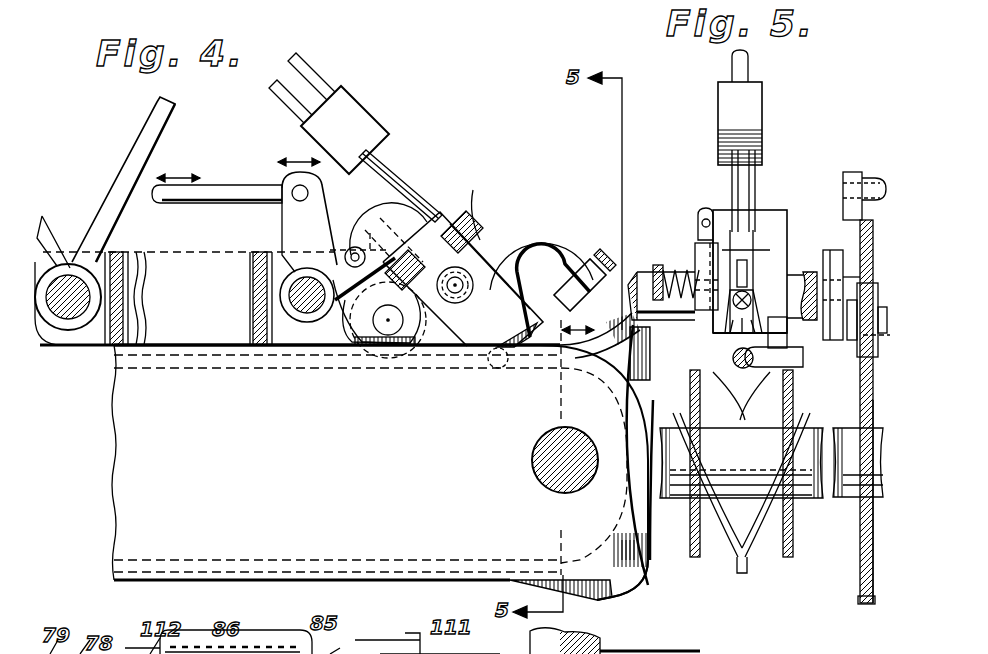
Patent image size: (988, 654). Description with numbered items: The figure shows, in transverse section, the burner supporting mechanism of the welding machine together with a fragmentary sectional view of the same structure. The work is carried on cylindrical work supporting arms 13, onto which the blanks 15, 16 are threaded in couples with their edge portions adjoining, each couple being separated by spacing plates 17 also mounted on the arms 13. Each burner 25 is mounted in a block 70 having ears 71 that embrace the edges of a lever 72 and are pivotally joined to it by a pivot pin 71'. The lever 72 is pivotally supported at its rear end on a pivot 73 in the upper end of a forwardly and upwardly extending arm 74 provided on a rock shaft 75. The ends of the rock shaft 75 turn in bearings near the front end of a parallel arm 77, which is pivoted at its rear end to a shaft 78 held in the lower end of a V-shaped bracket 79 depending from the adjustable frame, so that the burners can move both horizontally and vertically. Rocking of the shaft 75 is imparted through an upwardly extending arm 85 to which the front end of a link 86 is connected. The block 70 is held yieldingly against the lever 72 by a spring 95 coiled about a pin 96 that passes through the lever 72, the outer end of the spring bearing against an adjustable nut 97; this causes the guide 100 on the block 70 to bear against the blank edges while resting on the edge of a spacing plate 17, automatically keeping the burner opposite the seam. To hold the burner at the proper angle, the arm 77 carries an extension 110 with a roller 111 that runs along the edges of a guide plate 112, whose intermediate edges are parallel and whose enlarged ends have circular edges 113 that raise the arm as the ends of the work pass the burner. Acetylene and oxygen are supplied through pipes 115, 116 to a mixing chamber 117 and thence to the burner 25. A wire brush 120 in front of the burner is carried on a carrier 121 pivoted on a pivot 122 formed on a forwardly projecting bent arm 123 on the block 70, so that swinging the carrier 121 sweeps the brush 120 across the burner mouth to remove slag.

In FIG. 4, the work supporting arm 13 is at (533, 458).
In FIG. 5, the work supporting arm 13 is at (850, 450).
In FIG. 4, the blank 15 is at (612, 592).
In FIG. 5, the blank 15 is at (735, 552).
In FIG. 5, the blank 16 is at (760, 540).
In FIG. 4, the spacing plate 17 is at (622, 482).
In FIG. 5, the spacing plate 17 is at (692, 540).
In FIG. 4, the burner 25 is at (548, 258).
In FIG. 5, the burner 25 is at (757, 312).
In FIG. 4, the block 70 is at (487, 252).
In FIG. 5, the block 70 is at (775, 240).
In FIG. 4, the ear 71 is at (463, 252).
In FIG. 5, the ear 71 is at (774, 189).
In FIG. 4, the pivot pin 71' is at (475, 200).
In FIG. 5, the pivot pin 71' is at (686, 227).
In FIG. 4, the lever 72 is at (398, 212).
In FIG. 5, the lever 72 is at (703, 215).
In FIG. 4, the pivot 73 is at (356, 247).
In FIG. 4, the arm 74 is at (328, 345).
In FIG. 4, the rock shaft 75 is at (300, 322).
In FIG. 5, the rock shaft 75 is at (705, 335).
In FIG. 4, the arm 77 is at (185, 270).
In FIG. 5, the arm 77 is at (810, 290).
In FIG. 4, the shaft 78 is at (68, 285).
In FIG. 4, the bracket 79 is at (160, 122).
In FIG. 4, the arm 85 is at (283, 232).
In FIG. 5, the arm 85 is at (848, 172).
In FIG. 4, the link 86 is at (226, 188).
In FIG. 5, the link 86 is at (872, 178).
In FIG. 4, the spring 95 is at (490, 255).
In FIG. 5, the spring 95 is at (697, 262).
In FIG. 4, the pin 96 is at (410, 292).
In FIG. 5, the pin 96 is at (678, 318).
In FIG. 4, the adjustable nut 97 is at (456, 300).
In FIG. 5, the adjustable nut 97 is at (657, 270).
In FIG. 4, the guide 100 is at (502, 368).
In FIG. 5, the guide 100 is at (800, 368).
In FIG. 4, the extension 110 is at (375, 335).
In FIG. 4, the roller 111 is at (400, 340).
In FIG. 5, the roller 111 is at (862, 345).
In FIG. 4, the guide plate 112 is at (140, 355).
In FIG. 5, the guide plate 112 is at (862, 545).
In FIG. 4, the circular edge 113 is at (612, 598).
In FIG. 5, the circular edge 113 is at (860, 603).
In FIG. 4, the pipe 115 is at (290, 88).
In FIG. 4, the pipe 116 is at (328, 70).
In FIG. 5, the pipe 116 is at (752, 62).
In FIG. 4, the mixing chamber 117 is at (358, 112).
In FIG. 5, the mixing chamber 117 is at (752, 104).
In FIG. 4, the wire brush 120 is at (572, 262).
In FIG. 5, the wire brush 120 is at (740, 340).
In FIG. 4, the carrier 121 is at (602, 260).
In FIG. 5, the carrier 121 is at (750, 292).
In FIG. 5, the pivot 122 is at (640, 262).
In FIG. 4, the bent arm 123 is at (540, 245).
In FIG. 5, the bent arm 123 is at (728, 277).